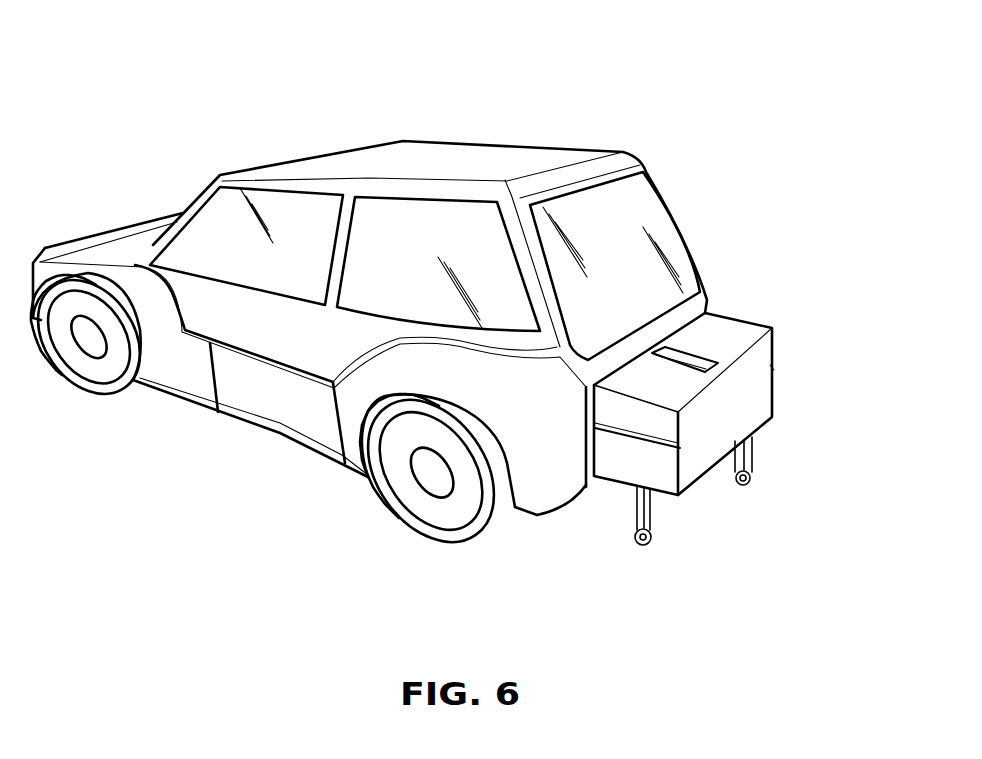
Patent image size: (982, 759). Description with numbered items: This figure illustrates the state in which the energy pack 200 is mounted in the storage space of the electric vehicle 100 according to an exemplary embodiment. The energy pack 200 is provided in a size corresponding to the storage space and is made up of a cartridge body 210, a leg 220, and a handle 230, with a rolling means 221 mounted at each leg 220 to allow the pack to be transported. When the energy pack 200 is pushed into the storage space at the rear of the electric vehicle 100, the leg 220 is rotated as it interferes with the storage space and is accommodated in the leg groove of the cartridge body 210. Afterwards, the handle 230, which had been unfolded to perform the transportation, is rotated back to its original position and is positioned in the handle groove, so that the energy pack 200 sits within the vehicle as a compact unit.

The electric vehicle 100 is at (500, 140).
The energy pack 200 is at (743, 401).
The cartridge body 210 is at (760, 407).
The leg 220 is at (652, 522).
The rolling means 221 is at (638, 546).
The handle 230 is at (703, 371).